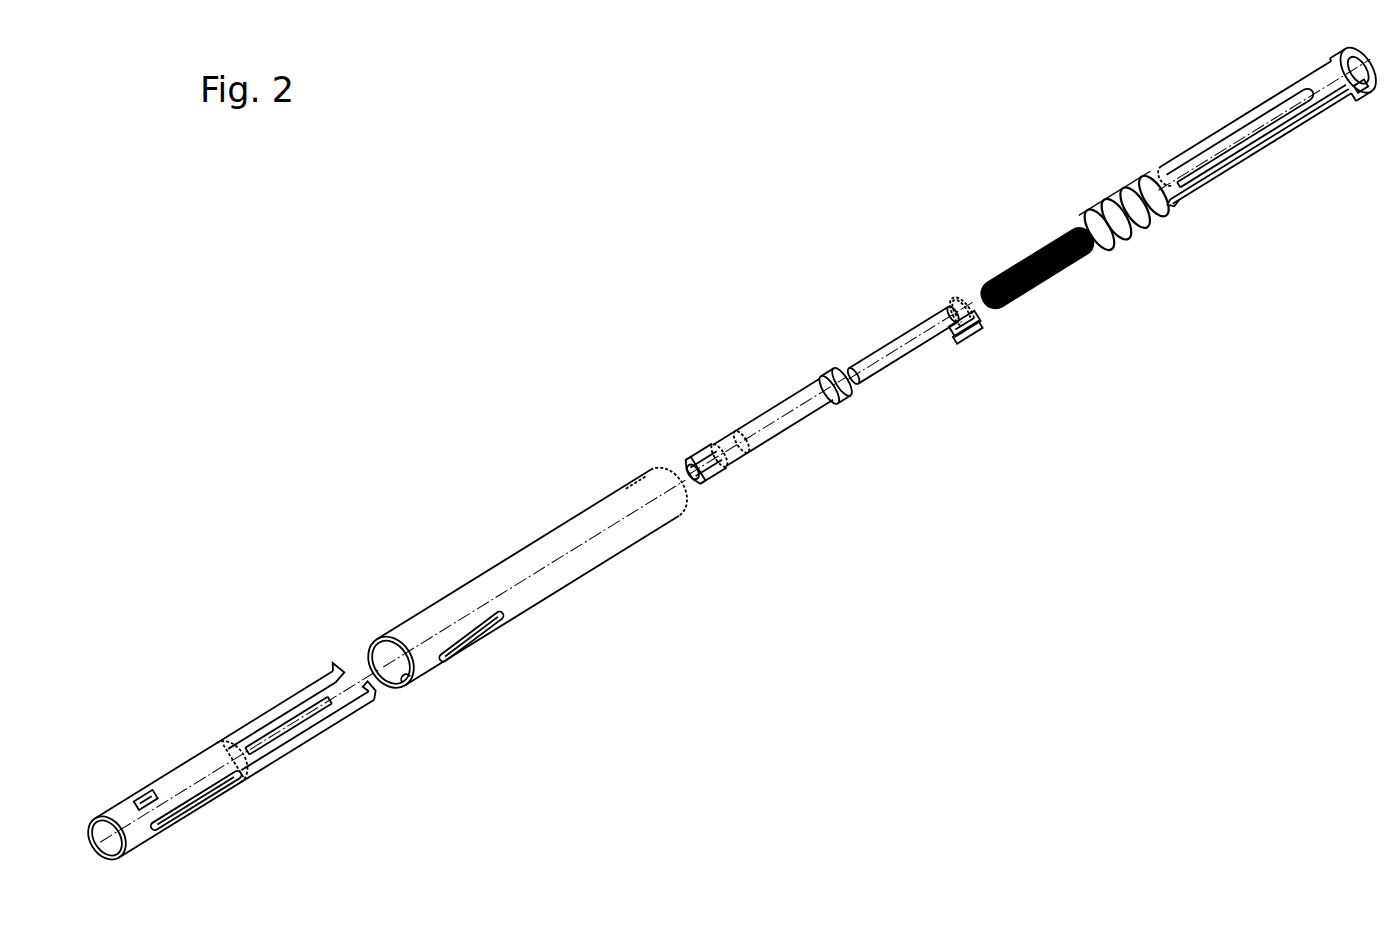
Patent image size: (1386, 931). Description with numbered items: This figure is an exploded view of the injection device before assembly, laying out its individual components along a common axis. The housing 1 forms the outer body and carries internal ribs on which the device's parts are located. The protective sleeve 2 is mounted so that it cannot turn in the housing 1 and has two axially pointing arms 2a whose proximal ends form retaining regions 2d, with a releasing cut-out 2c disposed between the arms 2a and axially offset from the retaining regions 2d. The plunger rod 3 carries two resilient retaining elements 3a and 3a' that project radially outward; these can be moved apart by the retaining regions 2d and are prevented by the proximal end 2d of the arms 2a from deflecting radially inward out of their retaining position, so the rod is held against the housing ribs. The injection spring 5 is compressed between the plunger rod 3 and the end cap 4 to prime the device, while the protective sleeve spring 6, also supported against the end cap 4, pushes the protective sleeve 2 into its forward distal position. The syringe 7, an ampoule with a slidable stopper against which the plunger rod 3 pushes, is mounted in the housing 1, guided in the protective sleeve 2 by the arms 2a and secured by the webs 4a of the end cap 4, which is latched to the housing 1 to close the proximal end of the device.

The housing 1 is at (553, 577).
The protective sleeve 2 is at (175, 781).
The arms 2a is at (247, 742).
The releasing cut-out 2c is at (300, 723).
The retaining regions 2d is at (328, 685).
The plunger rod 3 is at (897, 355).
The retaining element 3a is at (937, 278).
The retaining element 3a' is at (988, 366).
The end cap 4 is at (1318, 88).
The webs 4a is at (1208, 143).
The injection spring 5 is at (1047, 280).
The protective sleeve spring 6 is at (1137, 233).
The syringe 7 is at (785, 430).